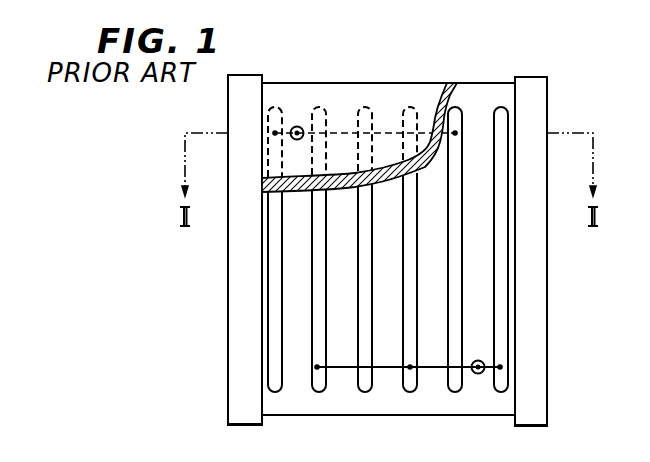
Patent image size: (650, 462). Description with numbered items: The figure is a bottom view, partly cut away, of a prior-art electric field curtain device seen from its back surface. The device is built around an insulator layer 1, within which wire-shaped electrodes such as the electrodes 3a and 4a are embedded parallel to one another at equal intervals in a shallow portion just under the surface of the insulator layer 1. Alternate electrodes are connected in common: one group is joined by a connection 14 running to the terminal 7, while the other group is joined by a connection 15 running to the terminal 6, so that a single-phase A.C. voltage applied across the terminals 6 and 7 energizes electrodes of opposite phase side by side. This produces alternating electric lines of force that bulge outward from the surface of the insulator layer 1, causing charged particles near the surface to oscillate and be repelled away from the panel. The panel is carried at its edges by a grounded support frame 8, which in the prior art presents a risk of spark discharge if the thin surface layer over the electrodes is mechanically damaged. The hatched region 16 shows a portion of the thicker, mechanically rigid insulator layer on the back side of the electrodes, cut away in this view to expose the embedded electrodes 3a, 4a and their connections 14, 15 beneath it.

The insulator layer 1 is at (343, 93).
The wire-shaped electrode 3a is at (502, 331).
The wire-shaped electrode 4a is at (457, 288).
The terminal 6 is at (478, 374).
The terminal 7 is at (297, 126).
The grounded support frame 8 is at (240, 93).
The connecting lead 14 is at (390, 130).
The connecting lead 15 is at (427, 369).
The mechanically rigid insulator layer 16 is at (270, 182).